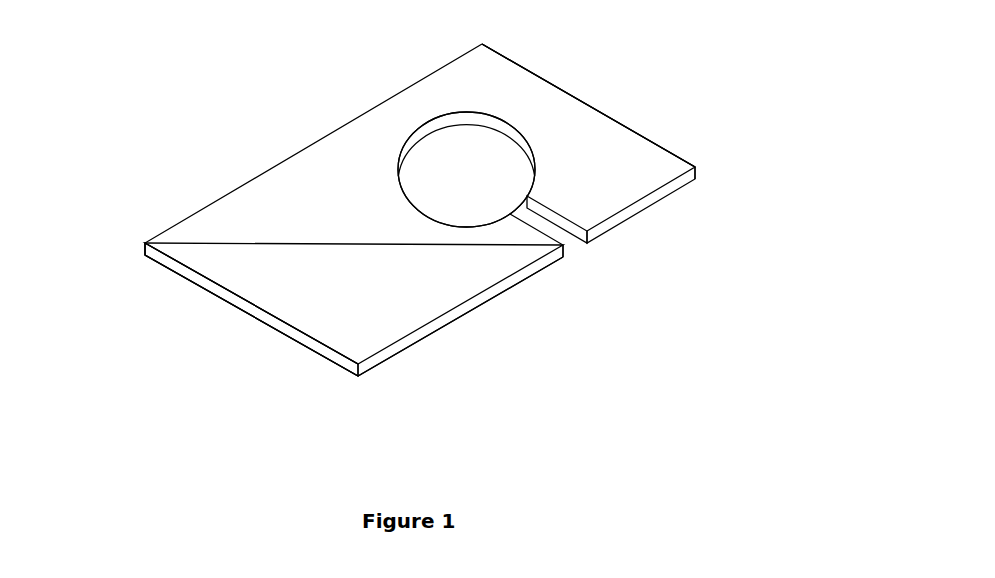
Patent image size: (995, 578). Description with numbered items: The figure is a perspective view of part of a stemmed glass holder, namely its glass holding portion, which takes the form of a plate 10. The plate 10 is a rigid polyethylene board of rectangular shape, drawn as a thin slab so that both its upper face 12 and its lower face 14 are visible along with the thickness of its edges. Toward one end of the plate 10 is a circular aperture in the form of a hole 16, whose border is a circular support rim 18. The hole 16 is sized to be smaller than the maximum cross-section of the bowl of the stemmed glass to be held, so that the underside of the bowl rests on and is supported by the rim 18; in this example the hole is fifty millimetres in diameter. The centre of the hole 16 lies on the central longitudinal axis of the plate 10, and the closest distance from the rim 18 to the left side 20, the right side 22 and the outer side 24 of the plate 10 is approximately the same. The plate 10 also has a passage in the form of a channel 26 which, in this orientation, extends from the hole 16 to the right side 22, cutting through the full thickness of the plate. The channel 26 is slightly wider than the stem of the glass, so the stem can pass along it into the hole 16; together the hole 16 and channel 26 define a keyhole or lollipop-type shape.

The plate 10 is at (238, 123).
The upper face 12 is at (253, 250).
The lower face 14 is at (263, 334).
The hole 16 is at (488, 147).
The circular support rim 18 is at (432, 122).
The left side 20 is at (172, 222).
The right side 22 is at (425, 342).
The outer side 24 is at (650, 132).
The channel 26 is at (570, 243).